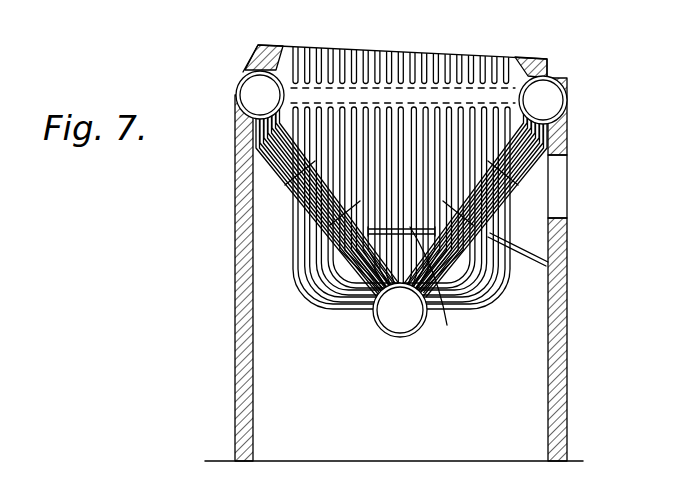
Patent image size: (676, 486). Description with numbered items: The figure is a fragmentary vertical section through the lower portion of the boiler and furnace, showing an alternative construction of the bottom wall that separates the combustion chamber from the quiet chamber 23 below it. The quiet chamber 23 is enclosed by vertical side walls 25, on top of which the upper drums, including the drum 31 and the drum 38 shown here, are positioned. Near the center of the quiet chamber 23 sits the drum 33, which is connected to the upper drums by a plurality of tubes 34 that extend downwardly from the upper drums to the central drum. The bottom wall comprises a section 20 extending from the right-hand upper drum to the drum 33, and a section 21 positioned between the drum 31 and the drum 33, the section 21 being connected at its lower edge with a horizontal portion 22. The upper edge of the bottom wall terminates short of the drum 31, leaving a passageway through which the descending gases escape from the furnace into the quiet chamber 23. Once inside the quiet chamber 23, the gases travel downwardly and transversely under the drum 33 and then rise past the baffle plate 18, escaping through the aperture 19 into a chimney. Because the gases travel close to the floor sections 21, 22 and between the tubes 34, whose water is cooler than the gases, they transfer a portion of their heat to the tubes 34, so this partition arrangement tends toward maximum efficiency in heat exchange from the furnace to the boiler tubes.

The baffle plate 18 is at (520, 249).
The opening 19 is at (560, 194).
The bottom wall section 20 is at (503, 152).
The bottom wall section 21 is at (315, 170).
The horizontal portion 22 is at (430, 286).
The quiet chamber 23 is at (295, 370).
The side walls 25 is at (237, 325).
The drum 31 is at (242, 78).
The drum 33 is at (403, 337).
The tubes 34 is at (296, 196).
The upper right drum 38 is at (566, 86).